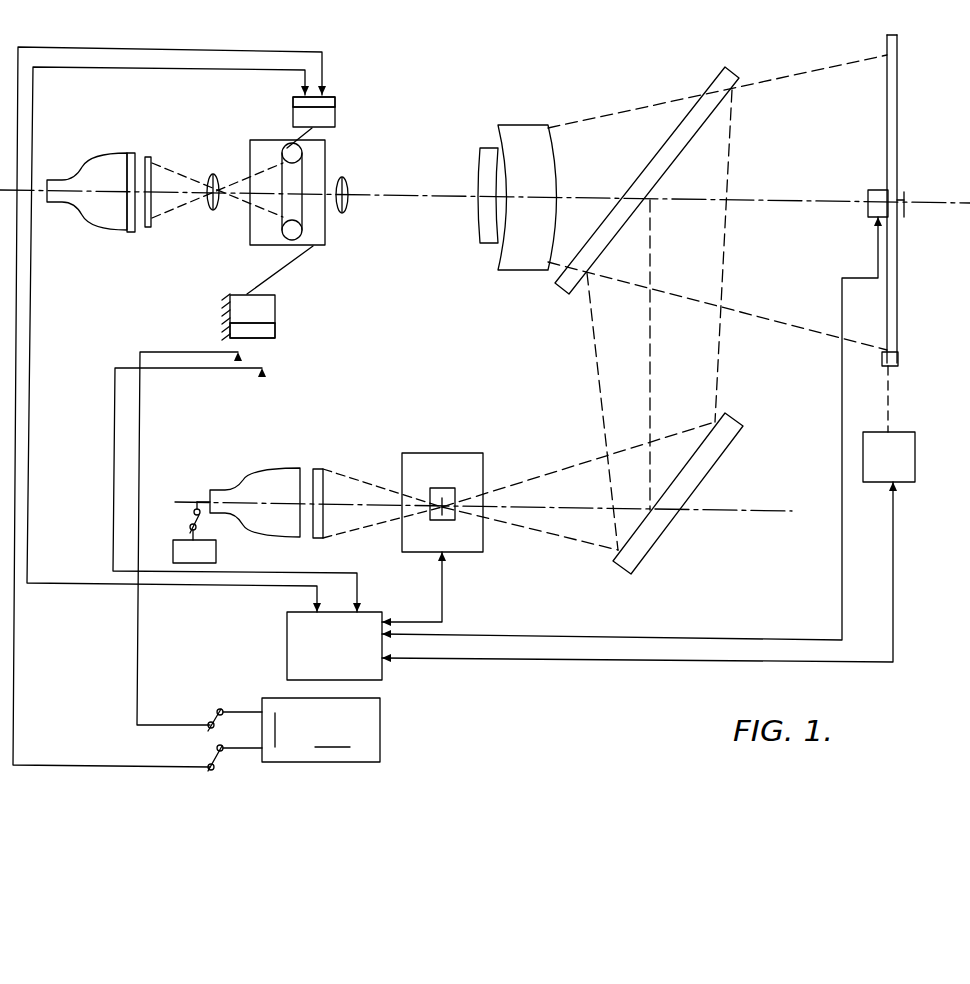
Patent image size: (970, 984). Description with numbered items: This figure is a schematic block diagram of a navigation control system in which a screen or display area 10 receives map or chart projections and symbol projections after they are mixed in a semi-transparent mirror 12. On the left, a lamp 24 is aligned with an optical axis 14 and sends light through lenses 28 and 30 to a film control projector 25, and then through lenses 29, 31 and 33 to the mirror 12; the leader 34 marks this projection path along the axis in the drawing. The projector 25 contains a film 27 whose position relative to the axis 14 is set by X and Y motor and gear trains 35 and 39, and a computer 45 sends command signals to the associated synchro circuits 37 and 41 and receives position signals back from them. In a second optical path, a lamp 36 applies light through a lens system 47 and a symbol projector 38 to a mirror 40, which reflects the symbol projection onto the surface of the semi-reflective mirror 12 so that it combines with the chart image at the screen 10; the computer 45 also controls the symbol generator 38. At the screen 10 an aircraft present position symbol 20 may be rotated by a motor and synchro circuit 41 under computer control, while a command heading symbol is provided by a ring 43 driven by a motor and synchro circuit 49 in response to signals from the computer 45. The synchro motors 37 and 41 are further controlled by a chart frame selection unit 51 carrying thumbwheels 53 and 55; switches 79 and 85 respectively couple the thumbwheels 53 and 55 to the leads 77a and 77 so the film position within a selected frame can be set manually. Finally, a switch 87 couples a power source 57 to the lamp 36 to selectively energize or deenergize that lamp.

The screen 10 is at (899, 154).
The semi-transparent mirror 12 is at (738, 52).
The optical axis 14 is at (172, 197).
The aircraft present position symbol 20 is at (904, 196).
The lamp 24 is at (94, 163).
The film control projector 25 is at (246, 231).
The film 27 is at (284, 181).
The lens 28 is at (151, 160).
The lens 29 is at (347, 178).
The lens 30 is at (217, 178).
The lens 31 is at (489, 148).
The lens 33 is at (524, 128).
The optical axis 34 is at (403, 206).
The motor and gear train 35 is at (240, 307).
The lamp 36 is at (256, 470).
The synchro circuit 37 is at (308, 323).
The symbol projector 38 is at (452, 452).
The motor and gear train 39 is at (300, 118).
The mirror 40 is at (735, 426).
The synchro circuit 41 is at (322, 95).
The ring 43 is at (895, 357).
The computer 45 is at (370, 621).
The lens system 47 is at (319, 470).
The motor and synchro circuit 49 is at (898, 437).
The chart frame selection unit 51 is at (382, 750).
The thumbwheel 53 is at (275, 713).
The thumbwheel 55 is at (348, 752).
The power source 57 is at (190, 563).
The lead 77 is at (165, 768).
The lead 77a is at (143, 727).
The switch 79 is at (216, 708).
The switch 85 is at (220, 770).
The switch 87 is at (185, 515).